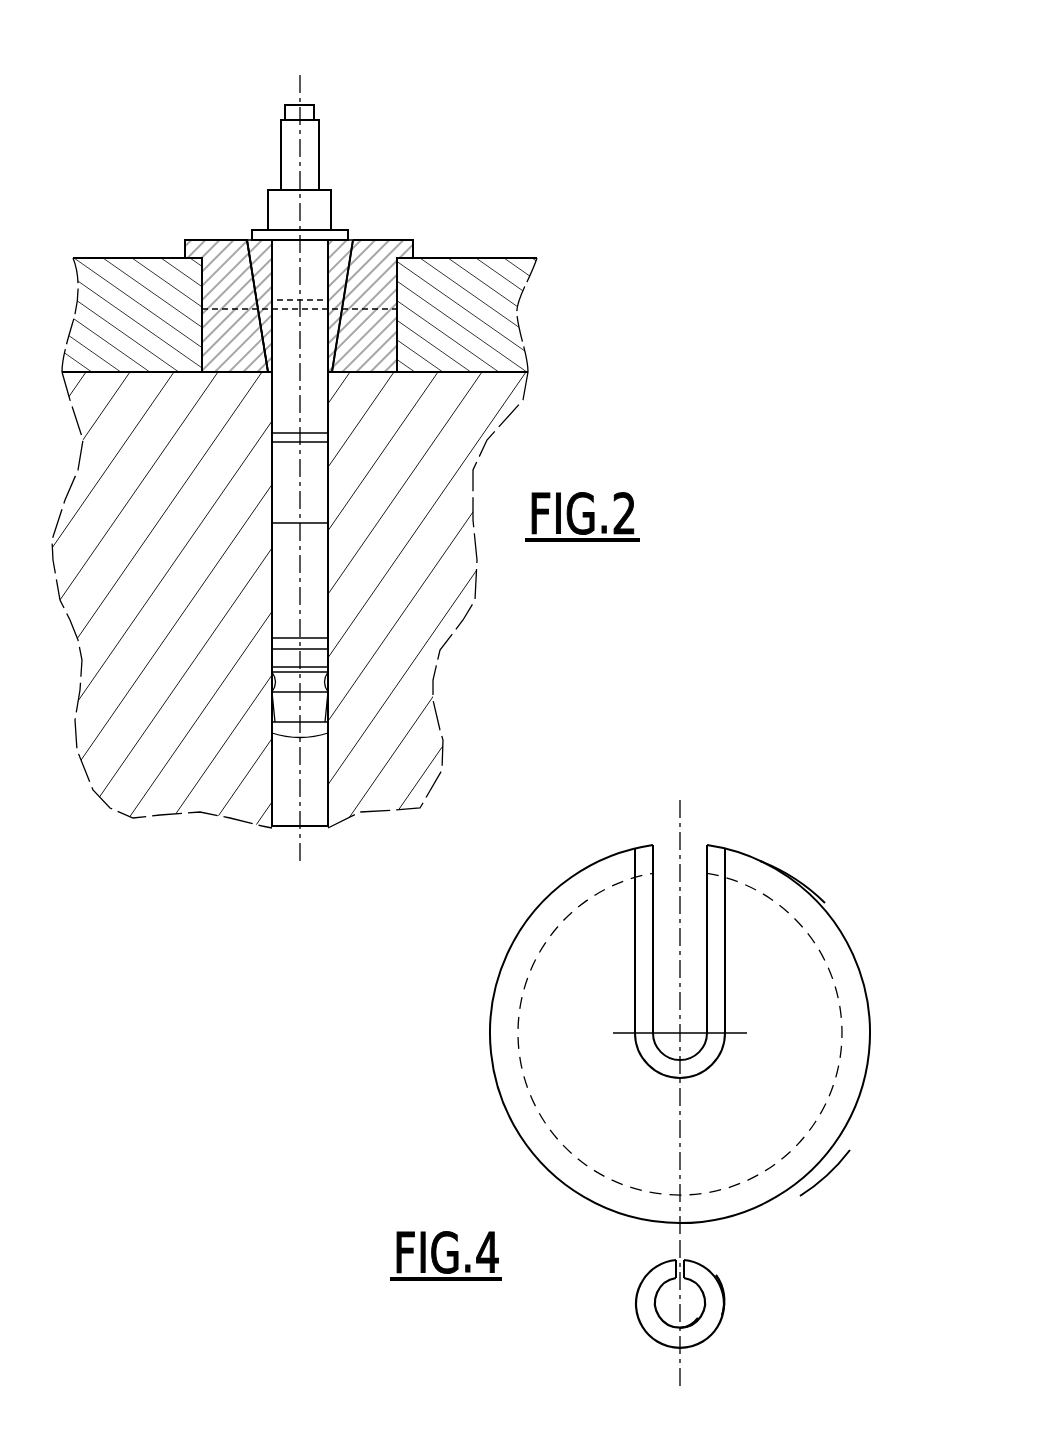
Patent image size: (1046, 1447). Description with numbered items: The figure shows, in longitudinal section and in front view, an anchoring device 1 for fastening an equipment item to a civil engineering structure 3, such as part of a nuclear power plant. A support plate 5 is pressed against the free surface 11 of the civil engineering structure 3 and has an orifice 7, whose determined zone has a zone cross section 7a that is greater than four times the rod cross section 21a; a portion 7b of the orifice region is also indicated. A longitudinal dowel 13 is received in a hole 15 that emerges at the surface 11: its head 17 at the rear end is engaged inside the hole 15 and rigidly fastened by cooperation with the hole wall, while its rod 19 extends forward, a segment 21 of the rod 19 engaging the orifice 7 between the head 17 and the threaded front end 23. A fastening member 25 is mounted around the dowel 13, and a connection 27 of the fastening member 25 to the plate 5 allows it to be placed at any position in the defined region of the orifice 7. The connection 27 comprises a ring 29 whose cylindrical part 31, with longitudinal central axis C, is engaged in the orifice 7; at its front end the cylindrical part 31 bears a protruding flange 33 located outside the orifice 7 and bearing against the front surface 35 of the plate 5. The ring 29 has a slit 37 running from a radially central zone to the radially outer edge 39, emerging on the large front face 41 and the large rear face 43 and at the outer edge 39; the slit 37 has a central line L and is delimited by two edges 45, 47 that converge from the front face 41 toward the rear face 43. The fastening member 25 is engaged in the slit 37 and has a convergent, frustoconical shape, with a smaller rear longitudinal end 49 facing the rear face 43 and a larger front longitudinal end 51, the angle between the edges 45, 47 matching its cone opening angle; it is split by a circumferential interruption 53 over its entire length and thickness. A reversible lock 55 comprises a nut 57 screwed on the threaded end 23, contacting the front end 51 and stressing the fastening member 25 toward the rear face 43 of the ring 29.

In FIG. 2, the anchoring device 1 is at (141, 173).
In FIG. 2, the civil engineering structure 3 is at (179, 584).
In FIG. 2, the support plate 5 is at (430, 280).
In FIG. 2, the orifice 7 is at (380, 300).
In FIG. 2, the zone cross section 7a is at (258, 372).
In FIG. 2, the upper bore portion 7b is at (516, 314).
In FIG. 2, the free surface 11 is at (467, 372).
In FIG. 2, the longitudinal dowel 13 is at (325, 71).
In FIG. 2, the hole 15 is at (356, 618).
In FIG. 2, the head 17 is at (317, 552).
In FIG. 2, the rod 19 is at (259, 140).
In FIG. 2, the segment 21 is at (248, 290).
In FIG. 2, the rod cross section 21a is at (348, 166).
In FIG. 2, the threaded front end 23 is at (290, 137).
In FIG. 2, the fastening member 25 is at (338, 272).
In FIG. 4, the fastening member 25 is at (596, 1326).
In FIG. 2, the connection 27 is at (415, 226).
In FIG. 2, the ring 29 is at (186, 278).
In FIG. 4, the ring 29 is at (455, 1069).
In FIG. 2, the cylindrical part 31 is at (235, 318).
In FIG. 4, the cylindrical part 31 is at (790, 1100).
In FIG. 2, the protruding flange 33 is at (185, 243).
In FIG. 4, the protruding flange 33 is at (862, 1025).
In FIG. 2, the front surface 35 is at (500, 257).
In FIG. 4, the slit 37 is at (695, 832).
In FIG. 4, the radially outer edge 39 is at (797, 873).
In FIG. 2, the large front face 41 is at (287, 287).
In FIG. 2, the large rear face 43 is at (243, 372).
In FIG. 2, the edge 45 is at (262, 337).
In FIG. 4, the edge 45 is at (643, 933).
In FIG. 2, the edge 47 is at (345, 350).
In FIG. 4, the edge 47 is at (720, 933).
In FIG. 2, the rear longitudinal end 49 is at (333, 372).
In FIG. 4, the rear longitudinal end 49 is at (700, 1318).
In FIG. 2, the front longitudinal end 51 is at (313, 296).
In FIG. 4, the front longitudinal end 51 is at (723, 1295).
In FIG. 4, the circumferential interruption 53 is at (686, 1268).
In FIG. 2, the reversible lock 55 is at (343, 230).
In FIG. 2, the nut 57 is at (278, 205).
In FIG. 4, the central line L is at (680, 830).
In FIG. 4, the central axis C is at (678, 1033).